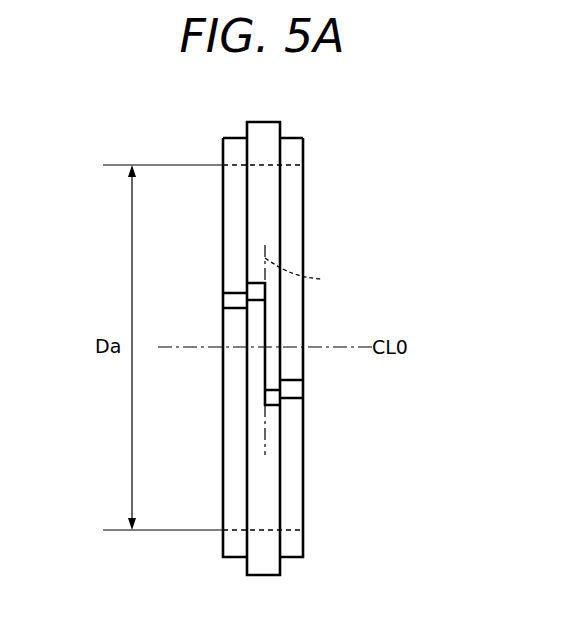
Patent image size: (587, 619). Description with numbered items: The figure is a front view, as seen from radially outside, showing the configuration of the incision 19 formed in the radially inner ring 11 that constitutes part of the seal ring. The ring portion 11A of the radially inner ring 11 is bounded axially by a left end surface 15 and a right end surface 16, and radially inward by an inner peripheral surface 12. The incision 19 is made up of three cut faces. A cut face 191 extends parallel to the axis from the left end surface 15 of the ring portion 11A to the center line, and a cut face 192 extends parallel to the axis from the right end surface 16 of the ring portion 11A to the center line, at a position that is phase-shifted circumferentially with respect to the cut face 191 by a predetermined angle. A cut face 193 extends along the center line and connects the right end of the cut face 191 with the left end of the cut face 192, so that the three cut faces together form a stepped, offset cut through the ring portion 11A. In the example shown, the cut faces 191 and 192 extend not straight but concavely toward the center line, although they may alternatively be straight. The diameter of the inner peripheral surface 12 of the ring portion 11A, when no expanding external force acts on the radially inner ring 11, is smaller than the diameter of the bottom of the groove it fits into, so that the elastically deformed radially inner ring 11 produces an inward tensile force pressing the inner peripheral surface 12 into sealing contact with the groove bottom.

The radially inner ring 11 is at (343, 100).
The ring portion 11A is at (303, 145).
The inner peripheral surface 12 is at (287, 165).
The left end surface 15 is at (222, 155).
The right end surface 16 is at (303, 160).
The incision 19 is at (261, 349).
The cut face 191 is at (238, 293).
The cut face 192 is at (293, 393).
The cut face 193 is at (267, 326).